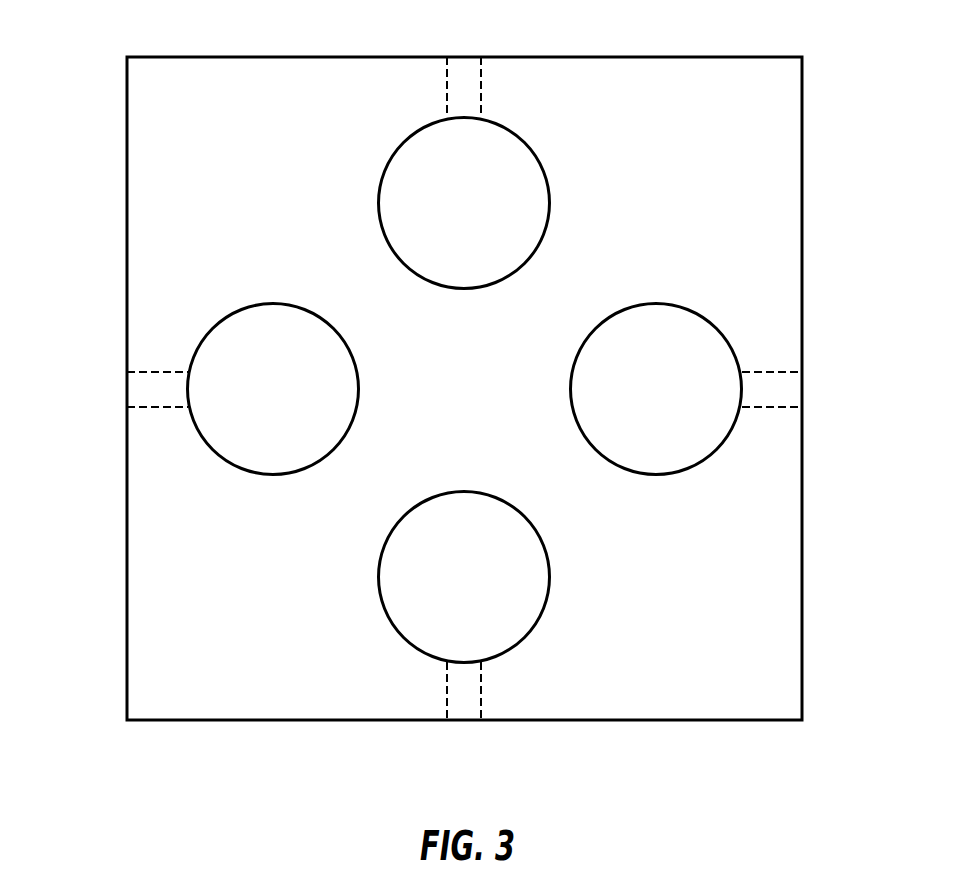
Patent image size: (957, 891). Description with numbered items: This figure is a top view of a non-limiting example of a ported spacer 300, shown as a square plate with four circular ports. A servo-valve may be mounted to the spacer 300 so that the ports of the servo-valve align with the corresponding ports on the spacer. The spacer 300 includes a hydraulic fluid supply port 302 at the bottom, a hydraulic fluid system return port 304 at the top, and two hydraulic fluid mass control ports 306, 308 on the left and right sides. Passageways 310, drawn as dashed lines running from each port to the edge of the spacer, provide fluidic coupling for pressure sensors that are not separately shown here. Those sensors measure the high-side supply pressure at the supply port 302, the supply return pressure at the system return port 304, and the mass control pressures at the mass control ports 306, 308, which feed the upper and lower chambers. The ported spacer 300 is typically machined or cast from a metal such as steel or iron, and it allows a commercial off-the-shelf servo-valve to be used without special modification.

The ported spacer 300 is at (233, 55).
The hydraulic fluid supply port 302 is at (423, 638).
The hydraulic fluid system return port 304 is at (507, 140).
The hydraulic fluid mass control port 306 is at (210, 448).
The hydraulic fluid mass control port 308 is at (718, 447).
The passageways 310 is at (465, 55).